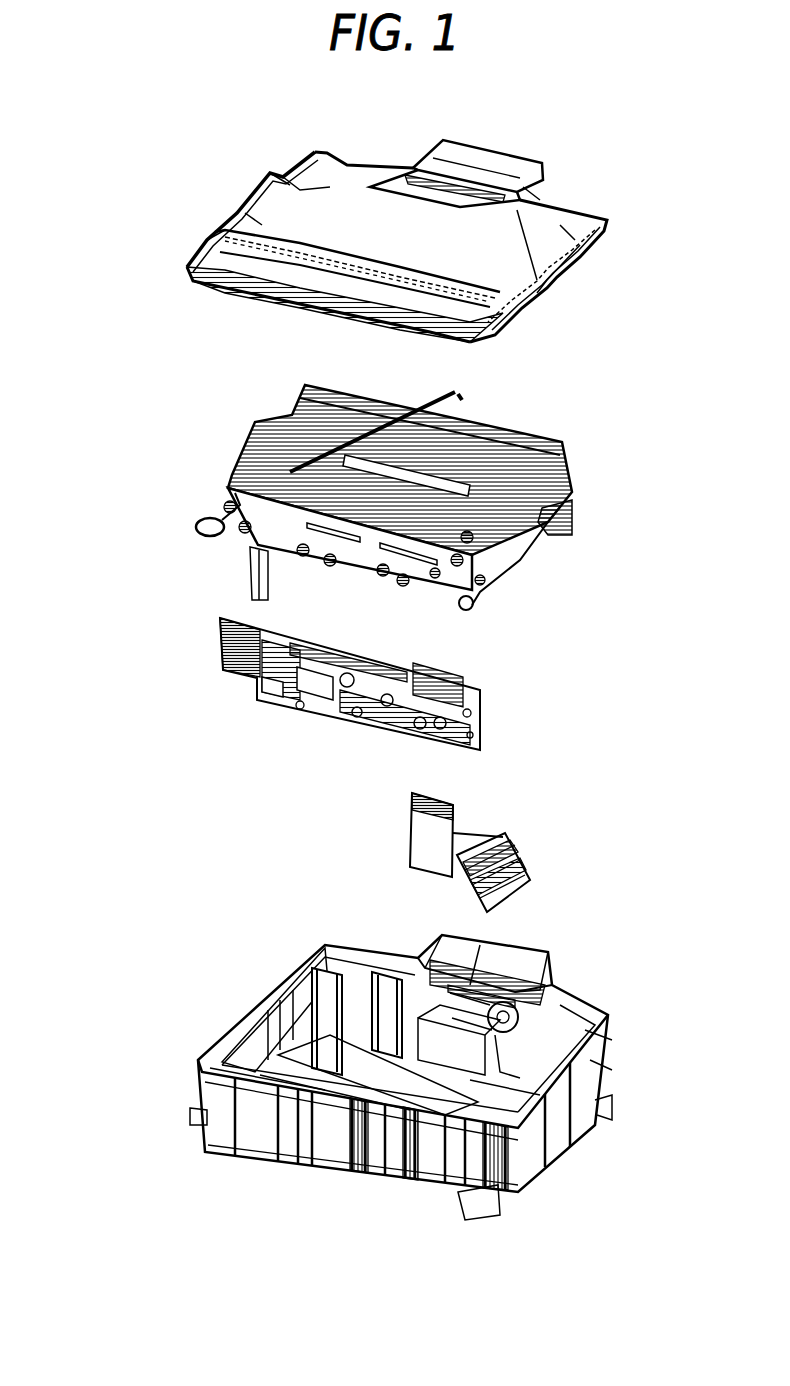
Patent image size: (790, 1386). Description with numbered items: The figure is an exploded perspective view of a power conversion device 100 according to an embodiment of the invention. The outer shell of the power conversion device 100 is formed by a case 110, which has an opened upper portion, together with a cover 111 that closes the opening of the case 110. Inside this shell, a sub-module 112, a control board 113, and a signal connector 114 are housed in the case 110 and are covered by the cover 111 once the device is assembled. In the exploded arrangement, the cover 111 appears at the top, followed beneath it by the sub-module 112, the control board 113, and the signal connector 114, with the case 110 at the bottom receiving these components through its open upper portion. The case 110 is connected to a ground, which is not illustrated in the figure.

The power conversion device 100 is at (210, 157).
The case 110 is at (200, 1100).
The cover 111 is at (493, 148).
The sub-module 112 is at (553, 527).
The control board 113 is at (220, 643).
The signal connector 114 is at (530, 870).